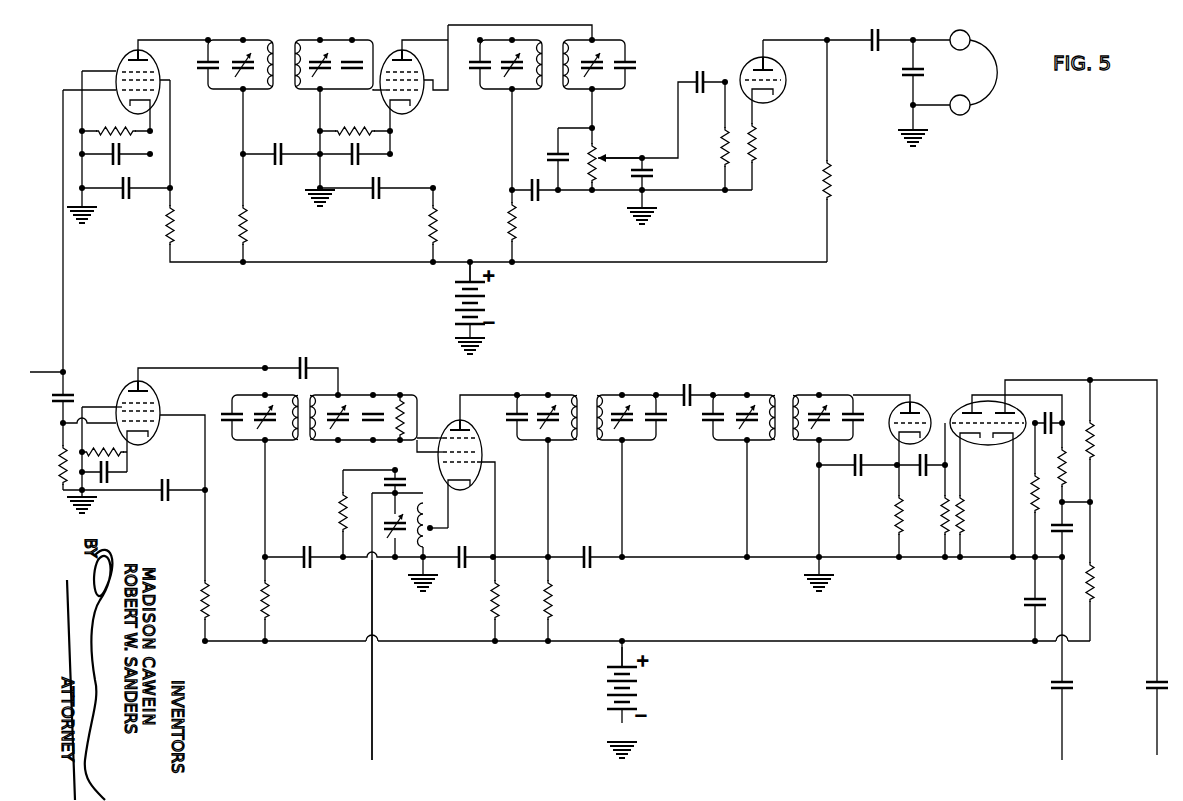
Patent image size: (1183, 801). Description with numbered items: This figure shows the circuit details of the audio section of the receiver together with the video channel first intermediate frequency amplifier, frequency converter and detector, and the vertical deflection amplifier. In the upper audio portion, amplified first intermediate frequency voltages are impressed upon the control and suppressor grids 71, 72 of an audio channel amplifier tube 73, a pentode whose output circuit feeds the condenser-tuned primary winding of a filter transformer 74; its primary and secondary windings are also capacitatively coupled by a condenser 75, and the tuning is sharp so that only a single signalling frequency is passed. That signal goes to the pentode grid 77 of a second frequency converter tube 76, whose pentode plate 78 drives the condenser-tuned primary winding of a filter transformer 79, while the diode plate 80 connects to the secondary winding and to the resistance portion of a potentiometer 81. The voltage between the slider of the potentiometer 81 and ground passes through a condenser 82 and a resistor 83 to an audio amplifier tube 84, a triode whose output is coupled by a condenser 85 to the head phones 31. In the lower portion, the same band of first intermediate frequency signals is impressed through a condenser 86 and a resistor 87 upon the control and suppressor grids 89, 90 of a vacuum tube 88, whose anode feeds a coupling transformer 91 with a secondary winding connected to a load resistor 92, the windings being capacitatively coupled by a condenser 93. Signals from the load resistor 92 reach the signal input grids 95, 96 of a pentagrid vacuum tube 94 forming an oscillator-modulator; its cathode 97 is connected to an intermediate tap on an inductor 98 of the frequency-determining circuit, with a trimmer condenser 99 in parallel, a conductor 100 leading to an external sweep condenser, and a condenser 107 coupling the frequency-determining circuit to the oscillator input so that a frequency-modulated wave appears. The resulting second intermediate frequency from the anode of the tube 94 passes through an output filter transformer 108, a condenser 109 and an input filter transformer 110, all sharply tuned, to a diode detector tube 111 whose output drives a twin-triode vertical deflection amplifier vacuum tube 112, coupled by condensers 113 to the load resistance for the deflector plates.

The head phones 31 is at (1001, 60).
The control grid 71 is at (128, 98).
The suppressor grid 72 is at (120, 66).
The audio channel amplifier tube 73 is at (138, 50).
The filter transformer 74 is at (281, 93).
The condenser 75 is at (279, 165).
The second frequency converter tube 76 is at (398, 52).
The pentode grid 77 is at (384, 98).
The pentode plate 78 is at (410, 64).
The filter transformer 79 is at (550, 92).
The diode plate 80 is at (410, 108).
The potentiometer 81 is at (597, 153).
The condenser 82 is at (702, 67).
The resistor 83 is at (723, 150).
The audio amplifier tube 84 is at (752, 60).
The condenser 85 is at (875, 52).
The condenser 86 is at (66, 392).
The resistor 87 is at (60, 462).
The vacuum tube 88 is at (127, 384).
The control grid 89 is at (122, 424).
The suppressor grid 90 is at (118, 405).
The coupling transformer 91 is at (295, 443).
The load resistor 92 is at (402, 398).
The condenser 93 is at (303, 357).
The vacuum tube 94 is at (449, 418).
The signal input grid 95 is at (482, 452).
The signal input grid 96 is at (444, 437).
The cathode 97 is at (452, 490).
The inductor 98 is at (433, 530).
The alignment or trimmer condenser 99 is at (398, 545).
The conductor 100 is at (374, 705).
The condenser 107 is at (388, 482).
The output filter transformer 108 is at (580, 442).
The condenser 109 is at (689, 386).
The input filter transformer 110 is at (777, 443).
The detector tube 111 is at (916, 402).
The vacuum tube 112 is at (962, 405).
The condensers 113 is at (1145, 687).